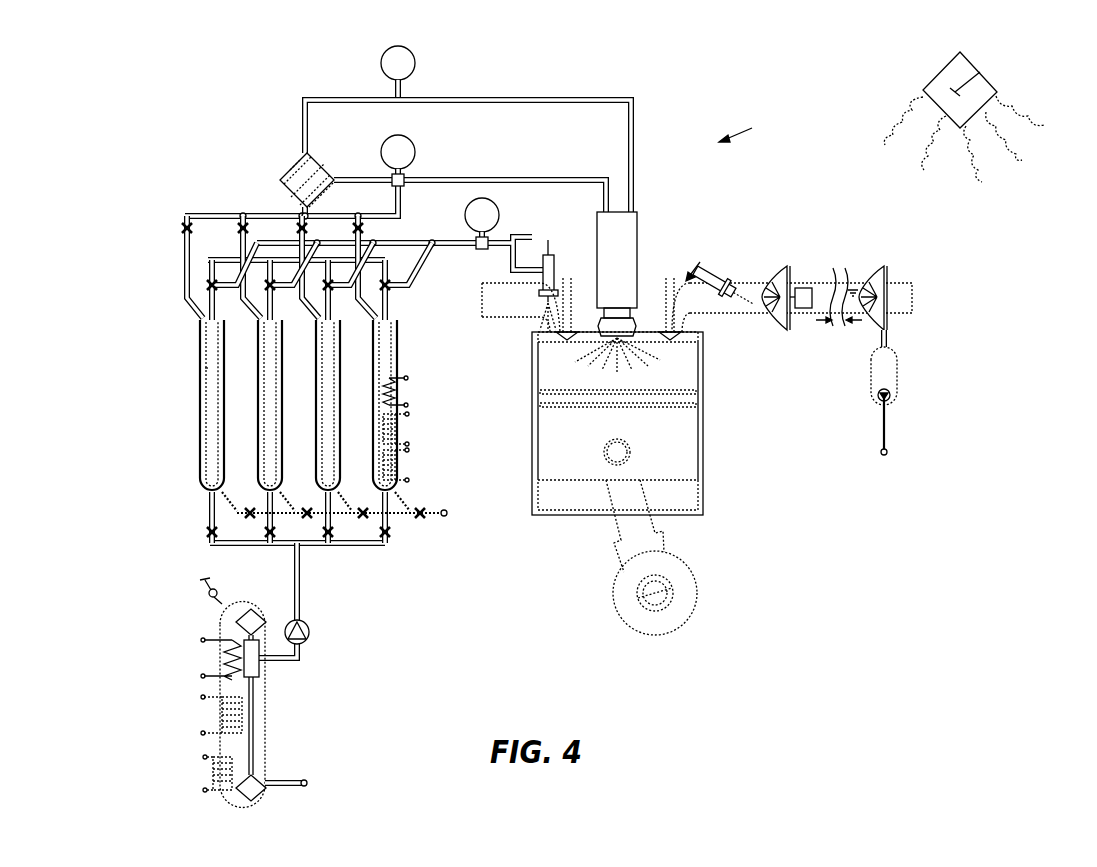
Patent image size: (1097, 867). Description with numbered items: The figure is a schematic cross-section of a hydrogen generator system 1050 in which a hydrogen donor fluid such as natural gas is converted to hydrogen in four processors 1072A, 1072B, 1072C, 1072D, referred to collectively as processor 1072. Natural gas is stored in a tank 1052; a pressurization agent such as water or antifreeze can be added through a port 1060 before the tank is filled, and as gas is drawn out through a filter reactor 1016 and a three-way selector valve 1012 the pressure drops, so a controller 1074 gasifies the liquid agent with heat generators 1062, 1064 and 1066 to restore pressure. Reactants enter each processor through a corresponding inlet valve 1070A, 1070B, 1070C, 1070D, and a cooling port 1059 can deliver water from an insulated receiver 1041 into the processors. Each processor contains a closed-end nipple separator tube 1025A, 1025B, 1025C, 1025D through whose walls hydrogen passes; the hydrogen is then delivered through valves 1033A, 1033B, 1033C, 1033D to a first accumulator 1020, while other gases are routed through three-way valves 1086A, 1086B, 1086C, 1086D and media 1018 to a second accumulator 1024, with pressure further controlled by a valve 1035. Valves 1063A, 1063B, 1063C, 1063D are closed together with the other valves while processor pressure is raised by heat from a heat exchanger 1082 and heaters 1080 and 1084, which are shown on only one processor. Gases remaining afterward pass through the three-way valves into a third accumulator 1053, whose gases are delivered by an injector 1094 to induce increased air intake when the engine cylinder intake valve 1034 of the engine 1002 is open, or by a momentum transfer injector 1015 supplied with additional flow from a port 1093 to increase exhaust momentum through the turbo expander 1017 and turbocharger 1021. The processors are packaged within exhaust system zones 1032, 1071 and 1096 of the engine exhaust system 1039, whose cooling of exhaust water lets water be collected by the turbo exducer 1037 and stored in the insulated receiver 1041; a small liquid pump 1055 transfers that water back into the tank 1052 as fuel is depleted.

The engine 1002 is at (704, 470).
The three-way selector valve 1012 is at (262, 668).
The momentum transfer injector 1015 is at (735, 280).
The filter reactor 1016 is at (240, 615).
The turbo expander 1017 is at (805, 286).
The media 1018 is at (298, 168).
The first accumulator 1020 is at (400, 148).
The turbocharger 1021 is at (853, 290).
The second accumulator 1024 is at (398, 62).
The first closed-end nipple separator tube 1025A is at (204, 318).
The second closed-end nipple separator tube 1025B is at (260, 318).
The third closed-end nipple separator tube 1025C is at (318, 320).
The fourth closed-end nipple separator tube 1025D is at (374, 318).
The exhaust system zone 1032 is at (703, 314).
The first valve 1033A is at (355, 222).
The second valve 1033B is at (300, 222).
The third valve 1033C is at (240, 222).
The fourth valve 1033D is at (185, 222).
The engine cylinder intake valve 1034 is at (566, 334).
The valve 1035 is at (484, 205).
The turbo exducer 1037 is at (913, 292).
The engine exhaust system 1039 is at (700, 262).
The insulated receiver 1041 is at (890, 370).
The hydrogen generator system 1050 is at (759, 127).
The tank 1052 is at (268, 772).
The third accumulator 1053 is at (548, 246).
The small liquid pump 1055 is at (887, 408).
The cooling port 1059 is at (446, 515).
The port 1060 is at (203, 593).
The heat generator 1062 is at (207, 650).
The valve 1063A is at (210, 525).
The valve 1063B is at (268, 525).
The valve 1063C is at (327, 525).
The valve 1063D is at (383, 527).
The heat generator 1064 is at (205, 710).
The heat generator 1066 is at (208, 773).
The inlet valve 1070A is at (252, 518).
The inlet valve 1070B is at (309, 518).
The inlet valve 1070C is at (365, 518).
The inlet valve 1070D is at (421, 518).
The exhaust system zone 1071 is at (826, 322).
The processor 1072 is at (182, 367).
The first processor 1072A is at (206, 373).
The second processor 1072B is at (264, 400).
The third processor 1072C is at (322, 420).
The fourth processor 1072D is at (379, 440).
The controller 1074 is at (990, 72).
The heat generator 1080 is at (400, 392).
The heat exchanger 1082 is at (400, 440).
The heat generator 1084 is at (400, 470).
The three-way valve 1086A is at (390, 285).
The three-way valve 1086B is at (333, 286).
The three-way valve 1086C is at (275, 286).
The three-way valve 1086D is at (217, 286).
The port 1093 is at (597, 252).
The injector 1094 is at (574, 292).
The exhaust zone 1096 is at (868, 278).